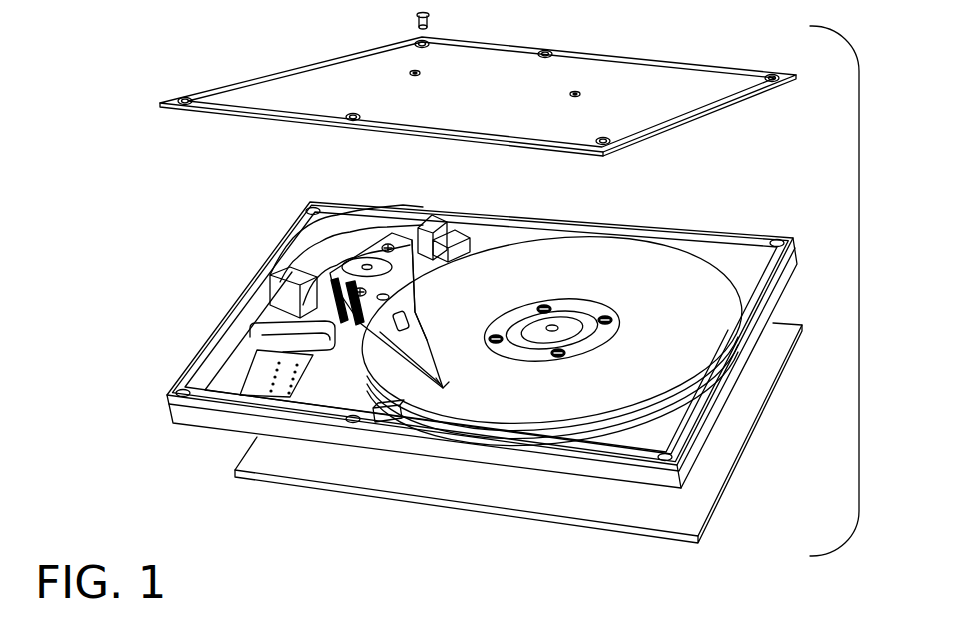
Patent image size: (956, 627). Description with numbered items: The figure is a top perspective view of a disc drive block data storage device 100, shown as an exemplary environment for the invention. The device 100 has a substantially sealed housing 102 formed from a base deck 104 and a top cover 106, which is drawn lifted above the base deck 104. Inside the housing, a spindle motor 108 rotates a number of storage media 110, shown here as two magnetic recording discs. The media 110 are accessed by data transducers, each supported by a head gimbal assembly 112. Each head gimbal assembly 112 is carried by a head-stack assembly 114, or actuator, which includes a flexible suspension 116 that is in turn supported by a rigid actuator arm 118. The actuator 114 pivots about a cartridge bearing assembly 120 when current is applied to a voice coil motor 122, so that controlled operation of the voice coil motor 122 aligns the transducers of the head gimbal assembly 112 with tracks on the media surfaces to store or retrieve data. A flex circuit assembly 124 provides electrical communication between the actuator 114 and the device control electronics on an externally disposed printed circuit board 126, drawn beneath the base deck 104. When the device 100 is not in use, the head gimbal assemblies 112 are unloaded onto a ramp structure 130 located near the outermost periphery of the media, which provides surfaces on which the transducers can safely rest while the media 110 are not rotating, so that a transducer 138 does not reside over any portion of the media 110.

The disc drive block data storage device 100 is at (207, 52).
The housing 102 is at (200, 210).
The base deck 104 is at (728, 387).
The top cover 106 is at (572, 68).
The spindle motor 108 is at (563, 325).
The storage media 110 is at (613, 443).
The head gimbal assembly 112 is at (450, 383).
The head-stack assembly 114 is at (420, 300).
The flexible suspension 116 is at (433, 357).
The actuator arm 118 is at (432, 318).
The cartridge bearing assembly 120 is at (390, 246).
The voice coil motor 122 is at (367, 258).
The flex circuit assembly 124 is at (275, 337).
The printed circuit board 126 is at (237, 478).
The ramp structure 130 is at (392, 418).
The transducer 138 is at (448, 397).